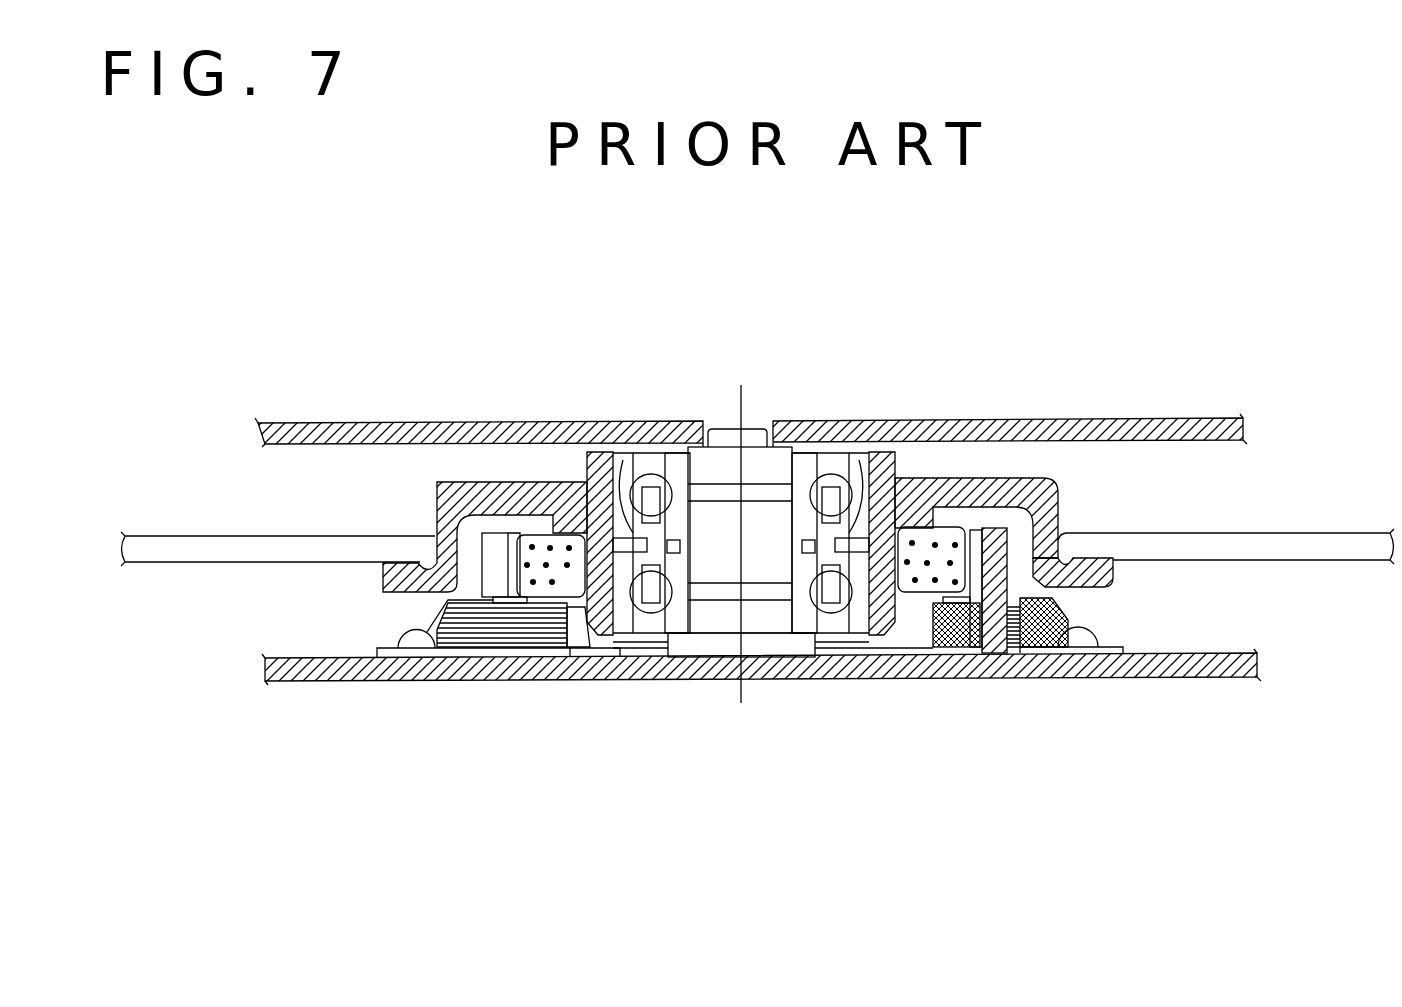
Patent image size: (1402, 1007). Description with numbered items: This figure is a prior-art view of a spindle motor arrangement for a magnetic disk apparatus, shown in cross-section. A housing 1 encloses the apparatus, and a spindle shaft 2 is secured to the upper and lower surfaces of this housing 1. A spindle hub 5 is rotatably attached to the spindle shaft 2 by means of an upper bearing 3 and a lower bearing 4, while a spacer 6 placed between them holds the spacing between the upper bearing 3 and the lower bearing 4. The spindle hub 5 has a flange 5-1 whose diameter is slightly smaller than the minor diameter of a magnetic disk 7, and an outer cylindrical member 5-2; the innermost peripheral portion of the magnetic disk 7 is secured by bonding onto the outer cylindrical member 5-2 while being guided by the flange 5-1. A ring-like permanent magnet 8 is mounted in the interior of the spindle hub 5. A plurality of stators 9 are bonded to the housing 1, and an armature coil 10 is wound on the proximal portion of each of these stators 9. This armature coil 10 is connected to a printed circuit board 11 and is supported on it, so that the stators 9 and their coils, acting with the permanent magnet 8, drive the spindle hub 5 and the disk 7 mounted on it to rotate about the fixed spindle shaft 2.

The housing 1 is at (1057, 421).
The spindle shaft 2 is at (755, 467).
The upper bearing 3 is at (827, 457).
The lower bearing 4 is at (858, 607).
The spindle hub 5 is at (577, 600).
The flange 5-1 is at (1058, 493).
The outer cylindrical member 5-2 is at (1100, 587).
The spacer 6 is at (640, 533).
The magnetic disk 7 is at (1243, 547).
The ring-like permanent magnet 8 is at (587, 607).
The stators 9 is at (493, 577).
The armature coil 10 is at (422, 663).
The printed circuit board 11 is at (493, 660).